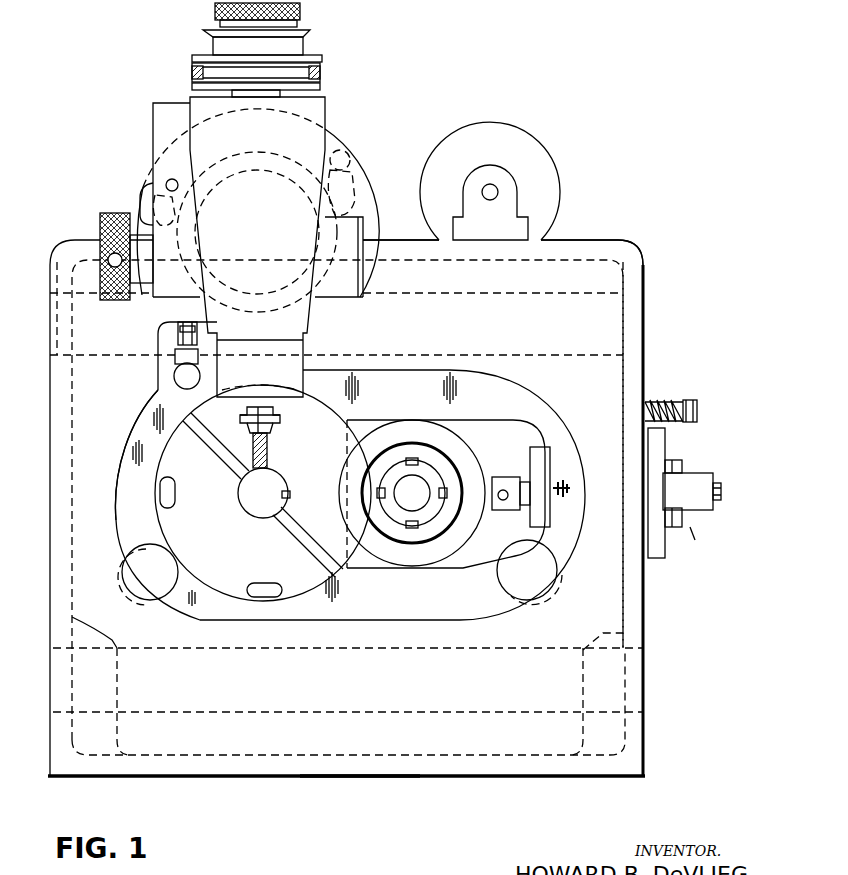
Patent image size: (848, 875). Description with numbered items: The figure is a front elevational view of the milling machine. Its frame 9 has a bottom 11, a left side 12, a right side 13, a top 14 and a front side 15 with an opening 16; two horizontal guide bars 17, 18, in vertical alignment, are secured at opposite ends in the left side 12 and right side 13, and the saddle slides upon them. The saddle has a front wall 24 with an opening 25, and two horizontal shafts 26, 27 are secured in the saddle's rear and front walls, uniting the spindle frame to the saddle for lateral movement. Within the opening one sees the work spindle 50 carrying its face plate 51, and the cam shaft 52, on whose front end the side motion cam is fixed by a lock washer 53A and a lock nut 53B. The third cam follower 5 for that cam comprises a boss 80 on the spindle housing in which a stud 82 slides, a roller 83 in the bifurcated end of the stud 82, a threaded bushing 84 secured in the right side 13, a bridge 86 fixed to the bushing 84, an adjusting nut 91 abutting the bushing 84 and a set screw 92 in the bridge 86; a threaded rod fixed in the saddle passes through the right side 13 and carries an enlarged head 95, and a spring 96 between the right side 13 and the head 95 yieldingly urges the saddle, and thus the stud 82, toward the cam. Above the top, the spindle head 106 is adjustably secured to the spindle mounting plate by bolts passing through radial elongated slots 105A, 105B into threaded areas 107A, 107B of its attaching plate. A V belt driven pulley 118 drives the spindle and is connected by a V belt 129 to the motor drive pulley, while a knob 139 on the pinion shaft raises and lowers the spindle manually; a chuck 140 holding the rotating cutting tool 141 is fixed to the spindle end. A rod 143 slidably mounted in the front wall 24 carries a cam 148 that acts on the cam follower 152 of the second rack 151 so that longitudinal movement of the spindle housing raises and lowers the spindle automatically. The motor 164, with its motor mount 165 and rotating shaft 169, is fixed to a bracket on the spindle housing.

The third cam follower 5 is at (690, 527).
The frame 9 is at (370, 778).
The bottom 11 is at (250, 778).
The left side 12 is at (55, 400).
The right side 13 is at (643, 384).
The top 14 is at (585, 242).
The front side 15 is at (162, 630).
The opening 16 is at (398, 622).
The guide bar 17 is at (645, 691).
The guide bar 18 is at (645, 318).
The front wall 24 is at (414, 395).
The opening 25 is at (466, 566).
The horizontal shaft 26 is at (515, 590).
The horizontal shaft 27 is at (150, 545).
The work spindle 50 is at (254, 500).
The face plate 51 is at (278, 561).
The cam shaft 52 is at (415, 480).
The lock washer 53A is at (390, 466).
The lock nut 53B is at (400, 520).
The boss 80 is at (545, 510).
The stud 82 is at (548, 462).
The roller 83 is at (500, 478).
The bushing 84 is at (660, 558).
The bridge 86 is at (700, 510).
The adjusting nut 91 is at (682, 465).
The set screw 92 is at (720, 490).
The enlarged head 95 is at (695, 402).
The spring 96 is at (672, 423).
The radial elongated slot 105A is at (350, 150).
The radial elongated slot 105B is at (148, 182).
The spindle head 106 is at (272, 271).
The threaded area 107A is at (358, 168).
The threaded area 107B is at (150, 200).
The V belt driven pulley 118 is at (300, 36).
The V belt 129 is at (322, 70).
The knob 139 is at (100, 225).
The chuck 140 is at (280, 421).
The rotating cutting tool 141 is at (267, 450).
The rod 143 is at (178, 381).
The cam 148 is at (178, 358).
The second rack 151 is at (178, 331).
The cam follower 152 is at (180, 340).
The motor 164 is at (548, 165).
The motor mount 165 is at (508, 228).
The rotating shaft 169 is at (498, 194).